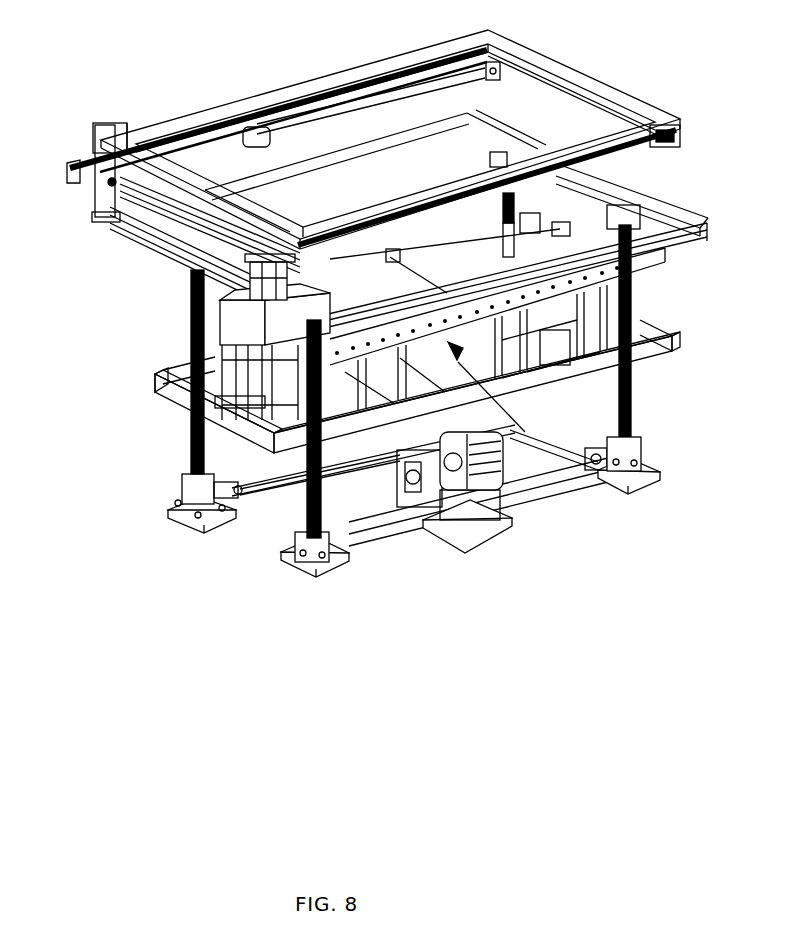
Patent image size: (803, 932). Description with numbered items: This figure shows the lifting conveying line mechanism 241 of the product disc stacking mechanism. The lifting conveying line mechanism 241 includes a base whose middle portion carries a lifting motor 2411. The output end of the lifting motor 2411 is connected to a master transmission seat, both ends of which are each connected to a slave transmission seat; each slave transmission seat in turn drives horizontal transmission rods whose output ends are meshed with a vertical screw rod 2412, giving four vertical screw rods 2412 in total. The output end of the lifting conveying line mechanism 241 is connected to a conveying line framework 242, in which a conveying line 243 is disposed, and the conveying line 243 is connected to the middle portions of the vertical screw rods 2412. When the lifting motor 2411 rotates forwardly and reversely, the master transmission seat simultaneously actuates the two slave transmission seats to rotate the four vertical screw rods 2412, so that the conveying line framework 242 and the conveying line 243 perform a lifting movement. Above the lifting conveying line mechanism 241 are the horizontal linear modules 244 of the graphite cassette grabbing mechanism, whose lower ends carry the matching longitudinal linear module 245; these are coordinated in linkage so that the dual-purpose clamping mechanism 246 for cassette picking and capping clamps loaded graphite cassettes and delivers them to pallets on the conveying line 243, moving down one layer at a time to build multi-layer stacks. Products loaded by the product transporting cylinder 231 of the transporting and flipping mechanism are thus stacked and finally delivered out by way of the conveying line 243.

The horizontal linear modules of the graphite cassette grabbing mechanism 244 is at (537, 152).
The longitudinal linear module of the graphite cassette grabbing mechanism 245 is at (98, 212).
The dual-purpose clamping mechanism for cassette picking and capping 246 is at (233, 300).
The conveying line 243 is at (470, 260).
The vertical screw rod 2412 is at (633, 381).
The product transporting cylinder 231 is at (258, 393).
The conveying line framework 242 is at (580, 480).
The lifting motor 2411 is at (497, 468).
The lifting conveying line mechanism 241 is at (462, 545).